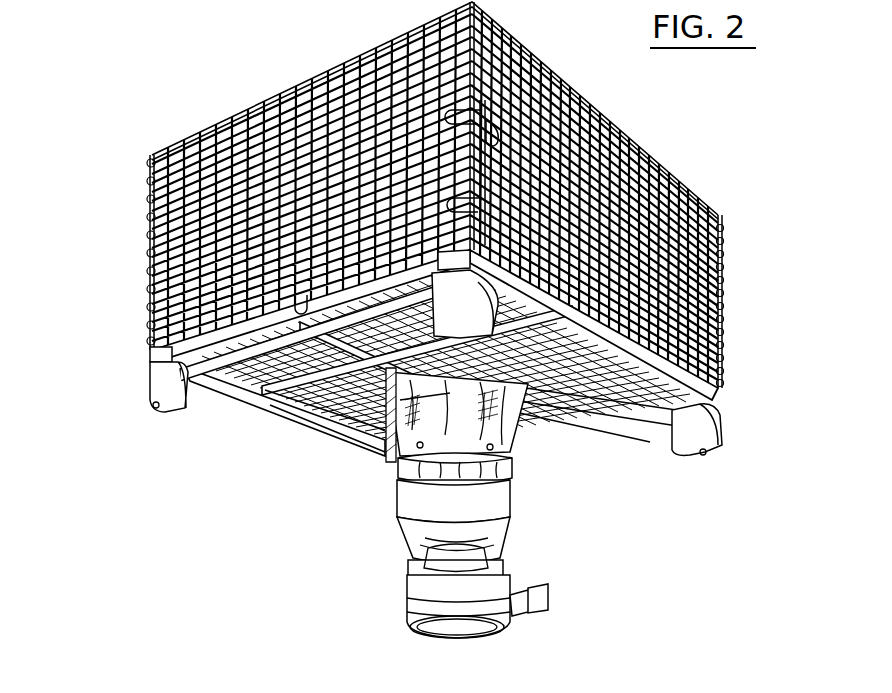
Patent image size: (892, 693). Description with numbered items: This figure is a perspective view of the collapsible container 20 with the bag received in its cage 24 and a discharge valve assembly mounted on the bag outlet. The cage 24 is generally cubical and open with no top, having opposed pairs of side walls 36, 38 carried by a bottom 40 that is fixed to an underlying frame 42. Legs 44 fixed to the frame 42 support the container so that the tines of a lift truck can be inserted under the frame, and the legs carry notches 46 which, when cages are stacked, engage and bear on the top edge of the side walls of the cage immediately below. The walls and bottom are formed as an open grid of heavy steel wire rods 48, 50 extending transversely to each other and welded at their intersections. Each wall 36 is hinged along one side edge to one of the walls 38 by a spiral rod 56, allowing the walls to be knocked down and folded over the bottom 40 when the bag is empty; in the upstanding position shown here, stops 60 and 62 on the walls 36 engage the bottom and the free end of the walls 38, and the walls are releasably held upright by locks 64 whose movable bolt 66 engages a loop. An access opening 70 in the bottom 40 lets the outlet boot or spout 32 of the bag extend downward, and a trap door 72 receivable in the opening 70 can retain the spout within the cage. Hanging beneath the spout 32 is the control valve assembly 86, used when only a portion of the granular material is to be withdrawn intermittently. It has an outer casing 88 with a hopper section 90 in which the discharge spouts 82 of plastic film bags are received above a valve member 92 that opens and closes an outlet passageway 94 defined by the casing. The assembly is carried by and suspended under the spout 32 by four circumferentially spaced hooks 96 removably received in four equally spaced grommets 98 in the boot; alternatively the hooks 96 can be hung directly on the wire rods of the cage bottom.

The collapsible container 20 is at (118, 209).
The cage 24 is at (300, 66).
The outlet boot or spout 32 is at (560, 435).
The side wall 36 is at (190, 132).
The side wall 38 is at (715, 323).
The bottom 40 is at (600, 430).
The frame 42 is at (215, 385).
The legs 44 is at (148, 396).
The notches 46 is at (150, 407).
The wire rods 48 is at (717, 220).
The wire rods 50 is at (690, 307).
The spiral rod 56 is at (152, 313).
The stop 60 is at (295, 312).
The stop 62 is at (488, 205).
The lock 64 is at (484, 110).
The movable bolt 66 is at (497, 144).
The access opening 70 is at (500, 395).
The trap door 72 is at (385, 437).
The discharge spouts 82 is at (512, 478).
The control valve assembly 86 is at (372, 529).
The outer casing 88 is at (524, 512).
The hopper section 90 is at (510, 541).
The valve member 92 is at (548, 590).
The outlet passageway 94 is at (440, 628).
The hooks 96 is at (400, 477).
The grommets 98 is at (402, 458).